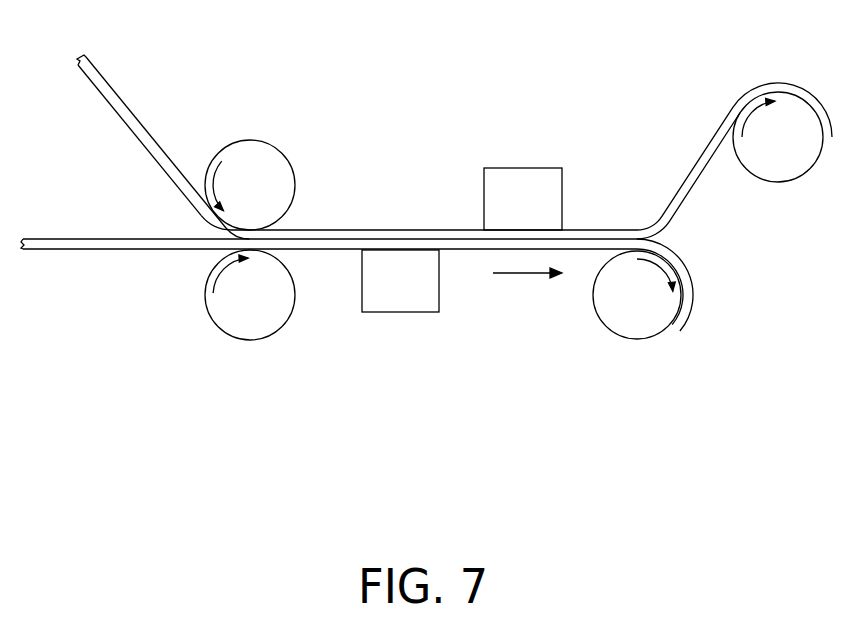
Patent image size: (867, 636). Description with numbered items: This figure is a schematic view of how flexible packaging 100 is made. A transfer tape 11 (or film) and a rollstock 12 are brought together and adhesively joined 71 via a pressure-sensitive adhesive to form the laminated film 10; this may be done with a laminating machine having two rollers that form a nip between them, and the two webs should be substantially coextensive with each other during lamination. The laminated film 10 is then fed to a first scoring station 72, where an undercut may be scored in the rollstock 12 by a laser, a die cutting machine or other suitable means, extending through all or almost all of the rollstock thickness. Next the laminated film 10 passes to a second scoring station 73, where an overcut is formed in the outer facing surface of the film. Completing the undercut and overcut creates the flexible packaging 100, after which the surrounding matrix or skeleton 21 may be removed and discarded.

The laminated film 10 is at (308, 240).
The transfer tape 11 is at (105, 92).
The rollstock 12 is at (60, 243).
The matrix or skeleton 21 is at (728, 128).
The adhesive joining 71 is at (295, 257).
The first scoring station 72 is at (386, 295).
The second scoring station 73 is at (509, 214).
The flexible packaging 100 is at (677, 260).